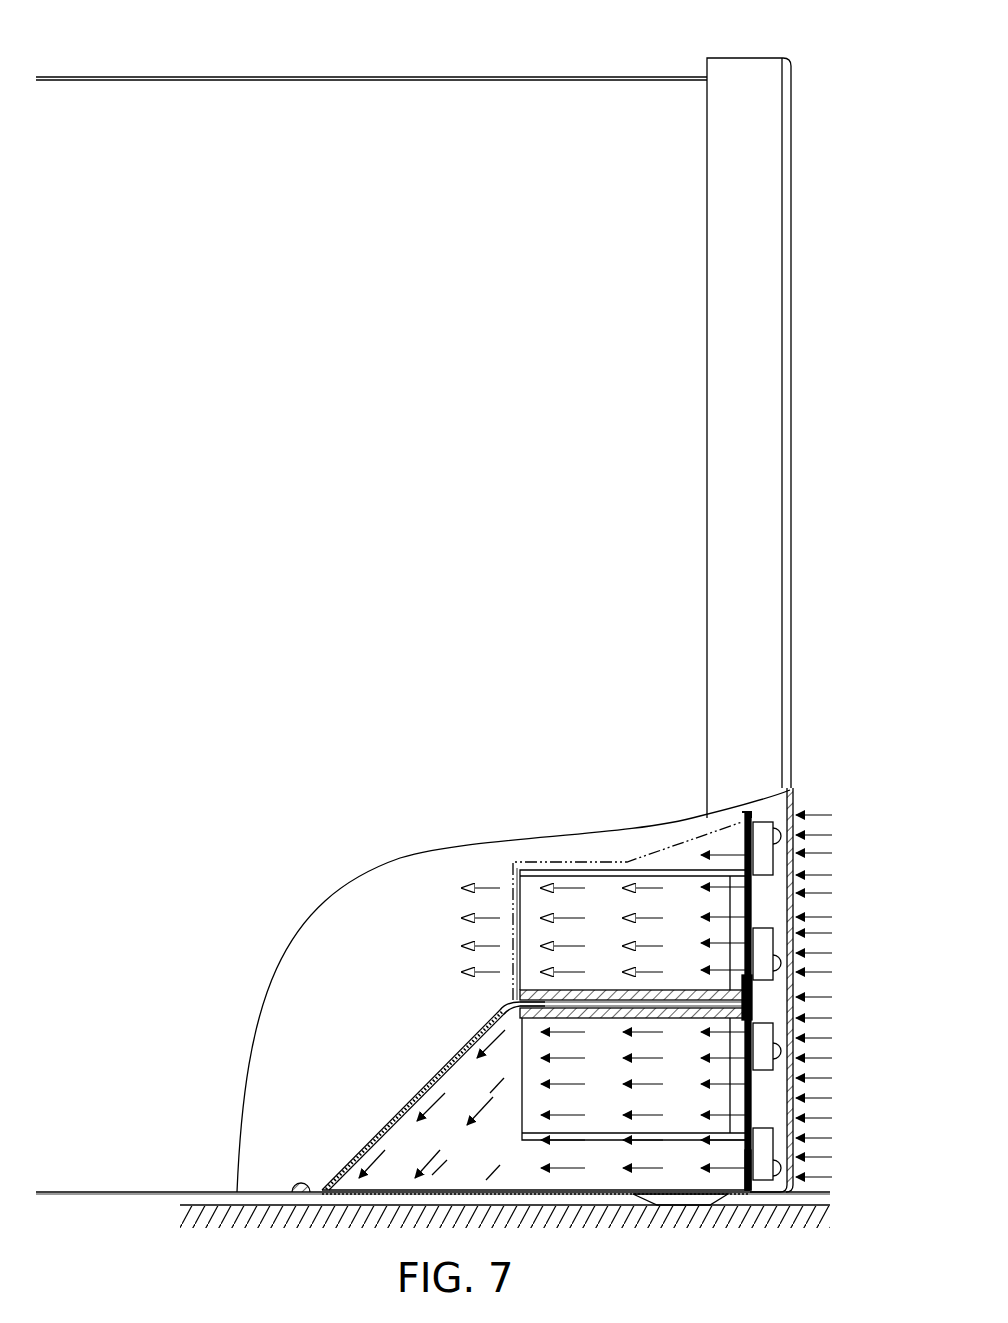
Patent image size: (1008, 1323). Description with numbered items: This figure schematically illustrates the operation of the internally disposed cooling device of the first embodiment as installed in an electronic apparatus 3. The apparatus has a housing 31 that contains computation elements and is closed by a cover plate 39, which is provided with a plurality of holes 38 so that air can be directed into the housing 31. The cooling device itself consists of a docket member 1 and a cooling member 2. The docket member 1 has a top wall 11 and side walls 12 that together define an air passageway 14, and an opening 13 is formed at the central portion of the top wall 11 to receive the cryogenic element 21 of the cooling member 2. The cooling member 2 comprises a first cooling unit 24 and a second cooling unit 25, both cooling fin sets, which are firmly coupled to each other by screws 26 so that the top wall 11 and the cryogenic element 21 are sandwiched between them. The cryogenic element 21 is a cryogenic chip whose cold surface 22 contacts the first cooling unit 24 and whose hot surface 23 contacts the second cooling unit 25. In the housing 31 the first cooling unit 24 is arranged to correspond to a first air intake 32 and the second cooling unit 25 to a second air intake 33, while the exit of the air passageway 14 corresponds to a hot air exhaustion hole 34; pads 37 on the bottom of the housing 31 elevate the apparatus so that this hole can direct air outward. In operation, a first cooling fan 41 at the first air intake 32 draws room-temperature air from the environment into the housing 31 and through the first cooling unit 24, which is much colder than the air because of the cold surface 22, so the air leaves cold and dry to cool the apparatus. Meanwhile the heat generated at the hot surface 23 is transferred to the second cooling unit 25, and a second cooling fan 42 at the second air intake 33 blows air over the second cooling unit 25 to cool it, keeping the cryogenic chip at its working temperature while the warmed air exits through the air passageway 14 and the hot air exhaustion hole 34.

The docket member 1 is at (422, 1070).
The cooling member 2 is at (514, 866).
The electronic apparatus 3 is at (342, 74).
The top wall 11 is at (752, 1000).
The side walls 12 is at (597, 1165).
The opening 13 is at (755, 1018).
The air passageway 14 is at (743, 1153).
The cryogenic element 21 is at (560, 1012).
The cold surface 22 is at (565, 993).
The hot surface 23 is at (495, 1007).
The first cooling unit 24 is at (718, 902).
The second cooling unit 25 is at (720, 1107).
The screws 26 is at (597, 856).
The housing 31 is at (519, 113).
The first air intake 32 is at (775, 930).
The second air intake 33 is at (763, 1058).
The hot air exhaustion hole 34 is at (382, 1200).
The pads 37 is at (682, 1200).
The holes 38 is at (793, 810).
The cover plate 39 is at (768, 455).
The first cooling fan 41 is at (762, 857).
The second cooling fan 42 is at (778, 1178).